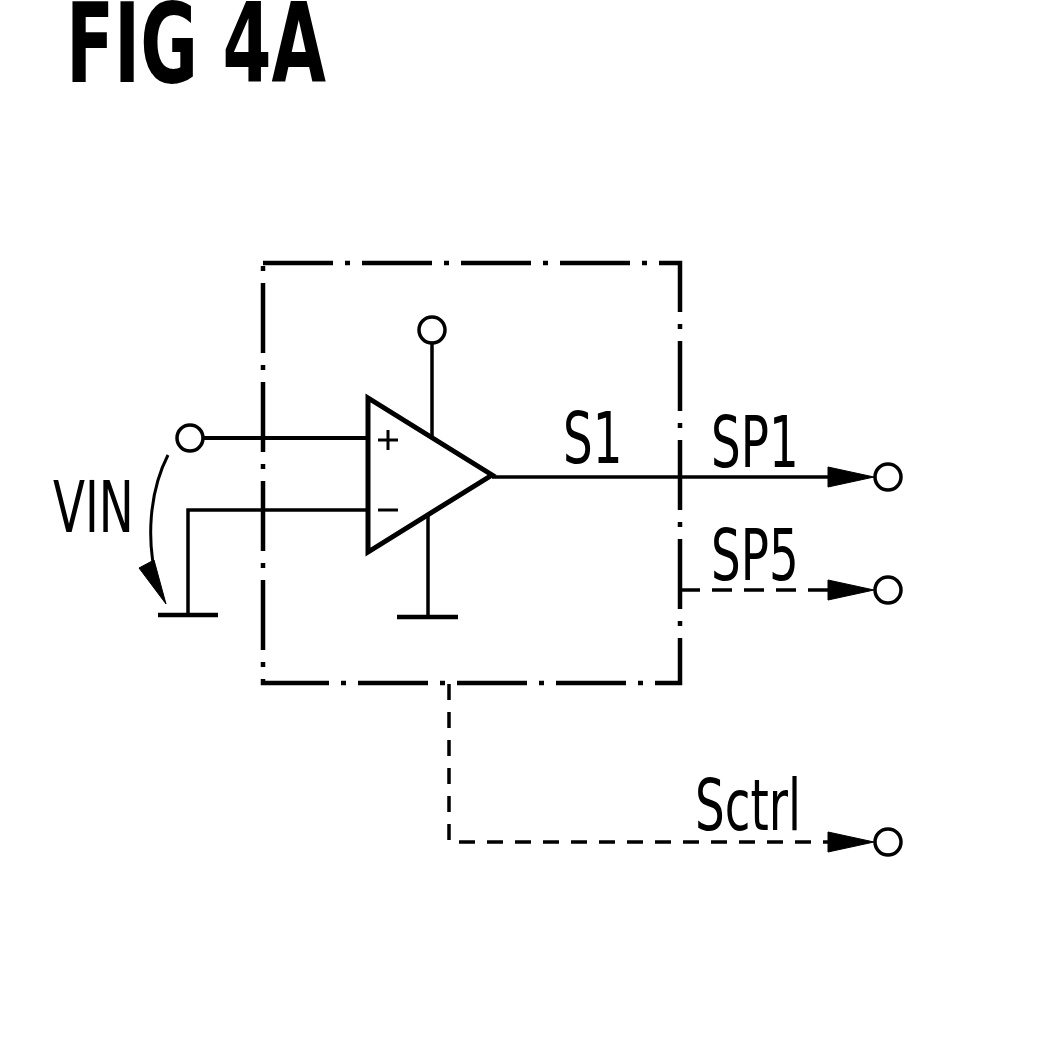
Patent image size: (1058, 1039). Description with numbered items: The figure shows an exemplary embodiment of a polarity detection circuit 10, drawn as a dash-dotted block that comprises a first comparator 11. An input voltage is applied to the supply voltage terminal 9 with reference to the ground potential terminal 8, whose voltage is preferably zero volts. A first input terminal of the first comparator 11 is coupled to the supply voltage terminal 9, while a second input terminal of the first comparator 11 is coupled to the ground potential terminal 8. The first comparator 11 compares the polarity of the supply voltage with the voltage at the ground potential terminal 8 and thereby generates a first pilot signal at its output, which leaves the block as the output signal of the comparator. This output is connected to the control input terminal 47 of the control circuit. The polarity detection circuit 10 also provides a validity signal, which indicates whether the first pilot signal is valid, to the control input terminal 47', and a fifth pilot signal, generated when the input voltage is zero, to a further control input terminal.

The ground potential terminal 8 is at (170, 618).
The supply voltage terminal 9 is at (192, 424).
The polarity detection circuit 10 is at (523, 264).
The first comparator 11 is at (453, 447).
The control input terminal 47 is at (714, 403).
The control input terminal 47' is at (693, 849).